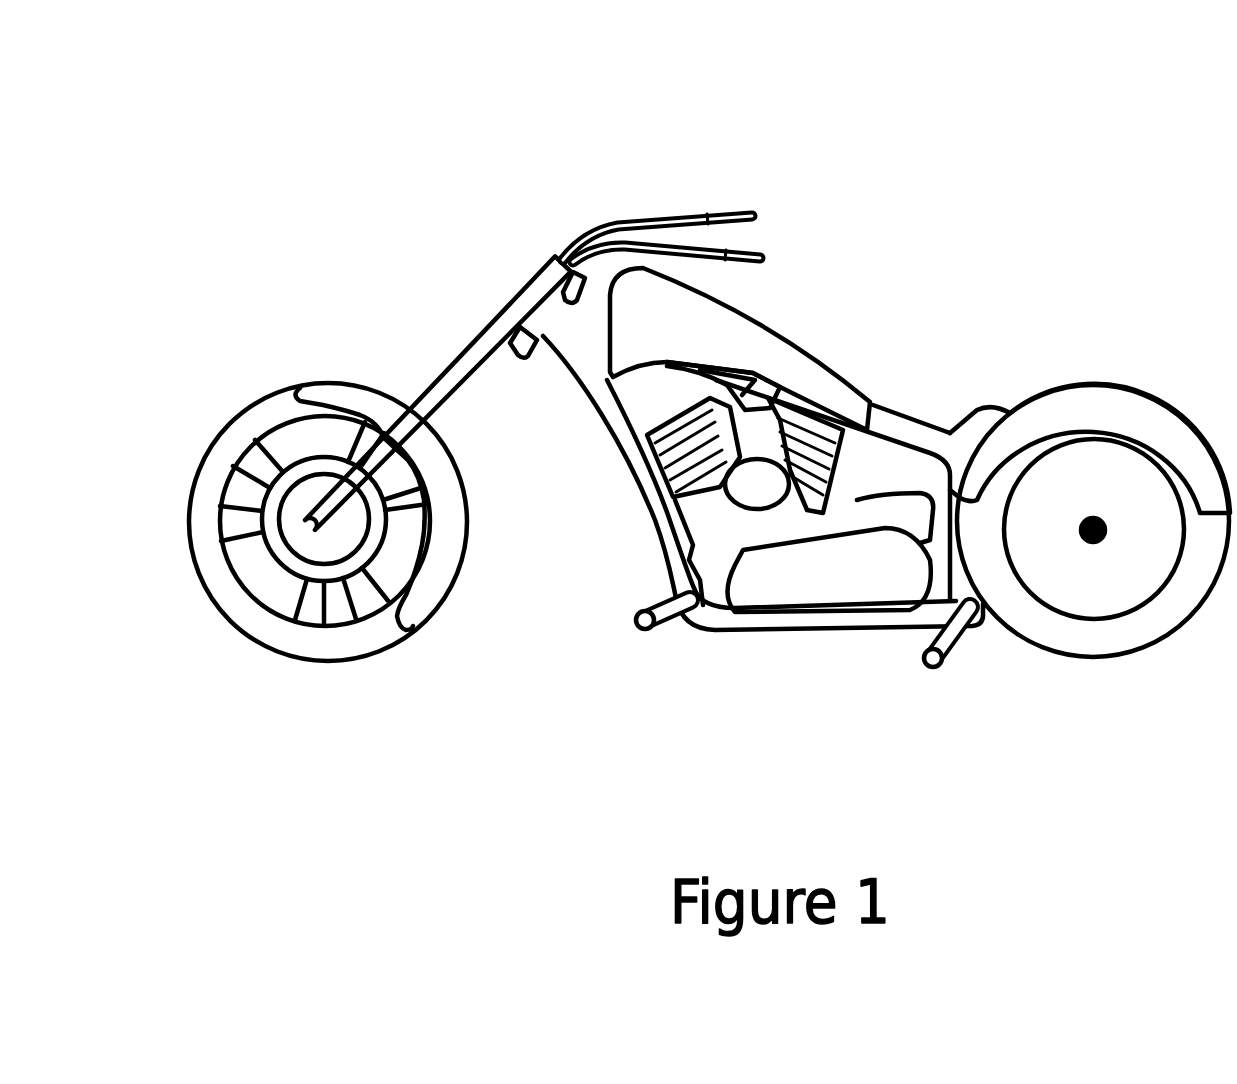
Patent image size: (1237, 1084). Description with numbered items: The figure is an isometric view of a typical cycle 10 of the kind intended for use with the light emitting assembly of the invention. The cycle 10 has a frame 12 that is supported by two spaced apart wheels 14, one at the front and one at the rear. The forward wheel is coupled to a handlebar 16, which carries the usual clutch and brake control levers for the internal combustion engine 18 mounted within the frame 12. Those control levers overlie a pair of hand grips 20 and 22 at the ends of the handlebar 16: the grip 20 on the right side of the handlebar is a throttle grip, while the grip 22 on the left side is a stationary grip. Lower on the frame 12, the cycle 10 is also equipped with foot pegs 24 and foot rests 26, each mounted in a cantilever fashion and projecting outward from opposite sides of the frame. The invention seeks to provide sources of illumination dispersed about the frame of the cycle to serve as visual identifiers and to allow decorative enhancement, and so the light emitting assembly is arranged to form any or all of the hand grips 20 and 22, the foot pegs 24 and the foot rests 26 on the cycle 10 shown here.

The cycle 10 is at (1003, 397).
The frame 12 is at (862, 633).
The wheels 14 is at (247, 648).
The handlebar 16 is at (615, 215).
The internal combustion engine 18 is at (790, 505).
The hand grip 20 is at (733, 207).
The hand grip 22 is at (777, 252).
The foot pegs 24 is at (660, 640).
The foot rests 26 is at (953, 662).